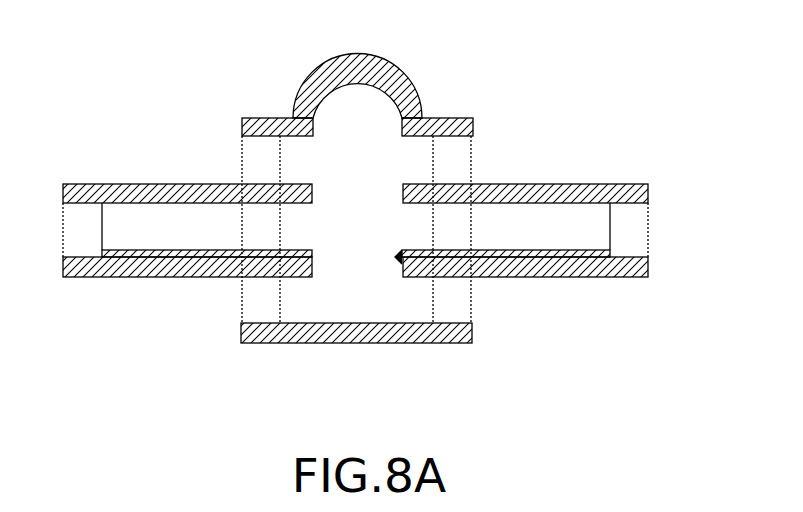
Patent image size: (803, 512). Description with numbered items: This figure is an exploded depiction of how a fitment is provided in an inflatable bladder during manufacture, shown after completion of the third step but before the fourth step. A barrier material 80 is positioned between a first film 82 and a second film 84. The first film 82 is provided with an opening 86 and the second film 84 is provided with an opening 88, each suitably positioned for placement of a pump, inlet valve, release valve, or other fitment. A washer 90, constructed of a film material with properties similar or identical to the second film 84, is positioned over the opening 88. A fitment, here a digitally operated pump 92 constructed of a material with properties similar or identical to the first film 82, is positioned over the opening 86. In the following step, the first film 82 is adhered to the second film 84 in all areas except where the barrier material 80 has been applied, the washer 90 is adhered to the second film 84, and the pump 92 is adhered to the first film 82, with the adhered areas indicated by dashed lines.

The barrier material 80 is at (150, 270).
The first film 82 is at (125, 184).
The second film 84 is at (72, 277).
The opening 86 is at (313, 194).
The opening 88 is at (400, 262).
The washer 90 is at (415, 343).
The digitally operated pump 92 is at (458, 118).